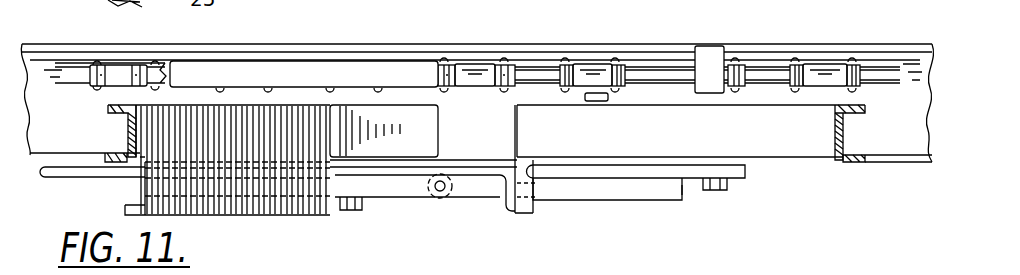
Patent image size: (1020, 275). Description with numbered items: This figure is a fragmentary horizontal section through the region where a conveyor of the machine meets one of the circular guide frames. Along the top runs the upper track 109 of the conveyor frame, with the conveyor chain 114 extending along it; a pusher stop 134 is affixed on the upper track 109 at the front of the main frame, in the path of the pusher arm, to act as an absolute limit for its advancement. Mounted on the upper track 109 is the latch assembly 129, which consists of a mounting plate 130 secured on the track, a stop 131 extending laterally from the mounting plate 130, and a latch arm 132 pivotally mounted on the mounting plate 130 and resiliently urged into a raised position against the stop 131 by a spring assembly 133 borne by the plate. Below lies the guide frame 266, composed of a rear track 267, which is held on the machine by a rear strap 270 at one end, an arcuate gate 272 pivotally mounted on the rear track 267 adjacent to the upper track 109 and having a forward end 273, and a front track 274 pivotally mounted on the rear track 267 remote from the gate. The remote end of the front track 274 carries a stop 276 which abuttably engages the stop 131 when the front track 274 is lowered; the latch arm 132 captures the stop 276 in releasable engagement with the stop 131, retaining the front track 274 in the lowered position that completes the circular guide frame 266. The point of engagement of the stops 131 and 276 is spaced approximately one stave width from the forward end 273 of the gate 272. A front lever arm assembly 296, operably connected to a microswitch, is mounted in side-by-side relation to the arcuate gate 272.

The upper track 109 is at (802, 53).
The conveyor chain 114 is at (530, 68).
The latch assembly 129 is at (692, 196).
The mounting plate 130 is at (745, 170).
The stop 131 is at (500, 208).
The latch arm 132 is at (570, 192).
The spring assembly 133 is at (437, 200).
The pusher stop 134 is at (707, 62).
The guide frame 266 is at (870, 168).
The rear track 267 is at (126, 130).
The rear strap 270 is at (90, 177).
The arcuate gate 272 is at (310, 205).
The forward end 273 is at (437, 126).
The front track 274 is at (845, 128).
The stop 276 is at (528, 210).
The front lever arm assembly 296 is at (268, 76).